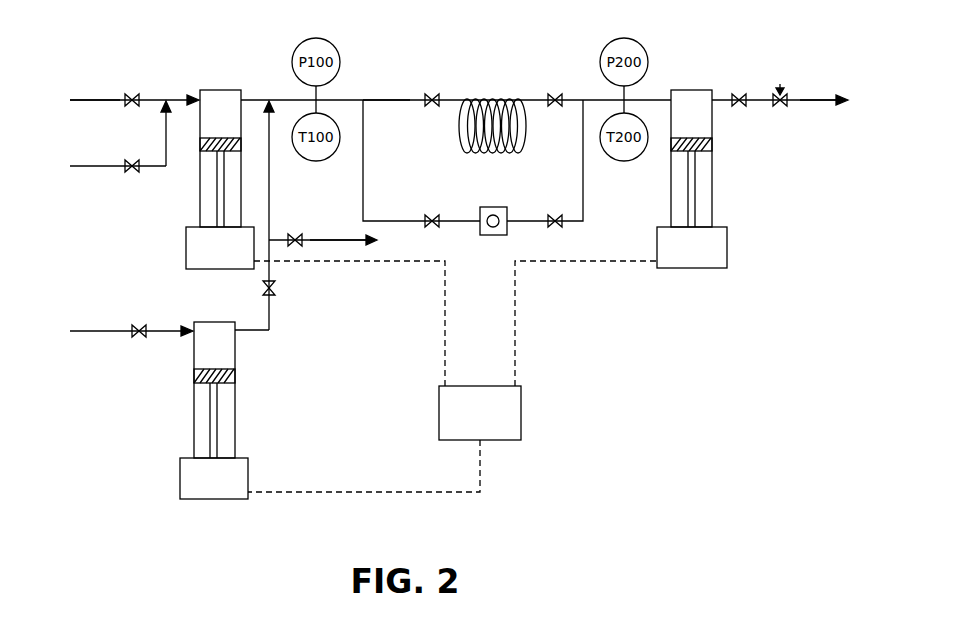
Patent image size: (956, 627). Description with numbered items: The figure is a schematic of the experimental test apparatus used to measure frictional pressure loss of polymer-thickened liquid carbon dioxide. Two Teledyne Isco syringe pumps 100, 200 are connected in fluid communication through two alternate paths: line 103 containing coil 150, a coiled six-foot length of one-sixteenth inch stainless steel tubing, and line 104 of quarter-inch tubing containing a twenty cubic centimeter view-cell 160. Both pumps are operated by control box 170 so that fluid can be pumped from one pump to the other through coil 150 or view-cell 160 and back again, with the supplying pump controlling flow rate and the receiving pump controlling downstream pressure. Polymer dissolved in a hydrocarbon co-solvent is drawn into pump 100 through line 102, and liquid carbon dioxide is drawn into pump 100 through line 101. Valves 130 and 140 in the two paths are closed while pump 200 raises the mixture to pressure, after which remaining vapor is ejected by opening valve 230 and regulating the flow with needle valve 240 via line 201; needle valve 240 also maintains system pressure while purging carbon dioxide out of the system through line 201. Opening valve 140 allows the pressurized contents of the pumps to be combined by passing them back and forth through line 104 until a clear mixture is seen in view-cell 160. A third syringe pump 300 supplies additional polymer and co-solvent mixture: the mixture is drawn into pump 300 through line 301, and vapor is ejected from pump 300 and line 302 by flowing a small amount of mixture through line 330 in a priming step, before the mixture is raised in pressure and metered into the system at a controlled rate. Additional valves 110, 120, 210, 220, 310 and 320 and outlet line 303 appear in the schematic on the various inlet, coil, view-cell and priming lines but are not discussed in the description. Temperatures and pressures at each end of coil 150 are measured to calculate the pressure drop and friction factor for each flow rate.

The line 101 is at (84, 97).
The valve 110 is at (132, 93).
The line 102 is at (84, 163).
The valve 120 is at (132, 159).
The syringe pump 100 is at (205, 258).
The line 330 is at (294, 233).
The discharge line 303 is at (333, 238).
The line 103 is at (380, 97).
The line 104 is at (366, 139).
The valve 130 is at (432, 93).
The coil 150 is at (492, 97).
The valve 210 is at (555, 93).
The valve 140 is at (432, 214).
The view-cell 160 is at (493, 206).
The valve 220 is at (555, 214).
The syringe pump 200 is at (677, 257).
The valve 230 is at (739, 93).
The needle valve 240 is at (783, 84).
The line 201 is at (832, 97).
The control box 170 is at (465, 423).
The valve 320 is at (276, 289).
The line 302 is at (270, 319).
The line 301 is at (88, 329).
The valve 310 is at (139, 324).
The syringe pump 300 is at (199, 488).